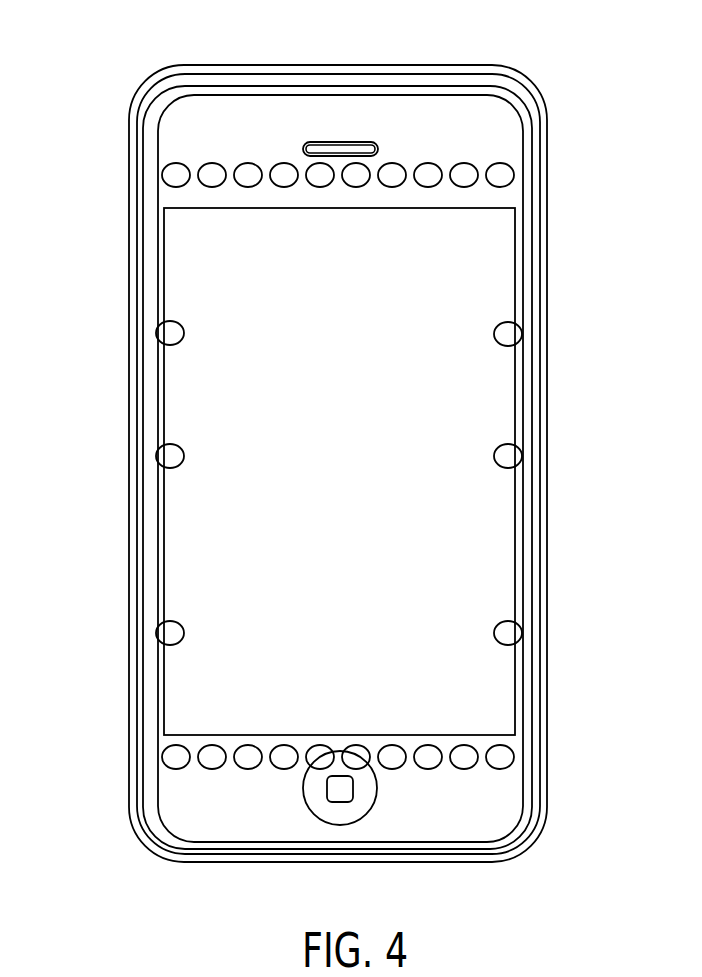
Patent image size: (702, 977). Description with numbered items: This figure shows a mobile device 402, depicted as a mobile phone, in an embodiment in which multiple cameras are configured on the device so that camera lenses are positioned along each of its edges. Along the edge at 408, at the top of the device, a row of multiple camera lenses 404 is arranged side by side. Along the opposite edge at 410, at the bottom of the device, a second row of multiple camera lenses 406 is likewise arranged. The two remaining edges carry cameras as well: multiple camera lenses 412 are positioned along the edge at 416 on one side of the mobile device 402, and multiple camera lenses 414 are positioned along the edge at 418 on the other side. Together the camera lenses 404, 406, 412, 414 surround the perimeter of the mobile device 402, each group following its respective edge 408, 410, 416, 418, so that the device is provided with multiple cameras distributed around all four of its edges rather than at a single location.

The mobile device 402 is at (92, 63).
The camera lenses 404 is at (168, 176).
The camera lenses 406 is at (175, 757).
The edge 408 is at (326, 67).
The edge 410 is at (414, 850).
The camera lenses 412 is at (170, 456).
The camera lenses 414 is at (510, 334).
The edge 416 is at (148, 426).
The edge 418 is at (543, 528).